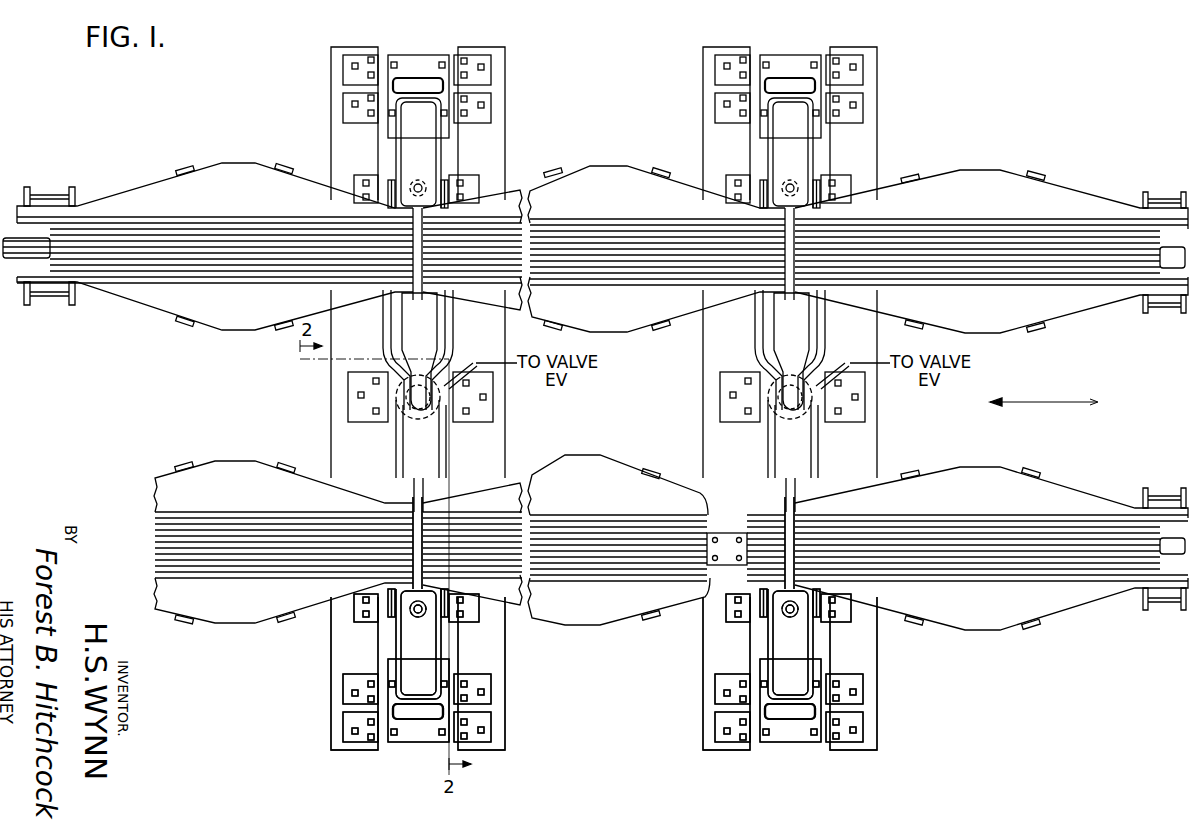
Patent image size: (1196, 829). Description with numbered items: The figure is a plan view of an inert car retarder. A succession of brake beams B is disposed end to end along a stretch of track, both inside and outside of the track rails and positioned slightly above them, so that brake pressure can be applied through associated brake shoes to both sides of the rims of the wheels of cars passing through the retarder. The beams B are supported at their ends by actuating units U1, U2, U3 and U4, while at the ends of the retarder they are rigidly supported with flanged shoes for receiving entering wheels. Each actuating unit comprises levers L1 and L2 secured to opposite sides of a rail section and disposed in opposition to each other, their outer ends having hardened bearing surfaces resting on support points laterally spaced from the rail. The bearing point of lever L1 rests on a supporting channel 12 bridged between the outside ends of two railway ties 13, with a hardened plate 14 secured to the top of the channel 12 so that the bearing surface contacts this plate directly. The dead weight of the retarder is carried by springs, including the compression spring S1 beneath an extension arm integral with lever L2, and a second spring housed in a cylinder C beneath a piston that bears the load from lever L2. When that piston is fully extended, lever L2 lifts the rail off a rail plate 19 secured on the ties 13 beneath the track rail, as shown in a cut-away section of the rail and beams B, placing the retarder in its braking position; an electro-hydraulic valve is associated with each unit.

The actuating unit U1 is at (451, 150).
The actuating unit U2 is at (823, 148).
The actuating unit U3 is at (445, 647).
The actuating unit U4 is at (818, 642).
The lever L1 is at (392, 640).
The lever L2 is at (430, 348).
The cylinder C is at (393, 400).
The spring S1 is at (417, 618).
The rail plate 19 is at (728, 533).
The supporting channel 12 is at (347, 725).
The railway ties 13 is at (332, 670).
The hardened plate 14 is at (410, 729).
The brake beams B is at (164, 186).